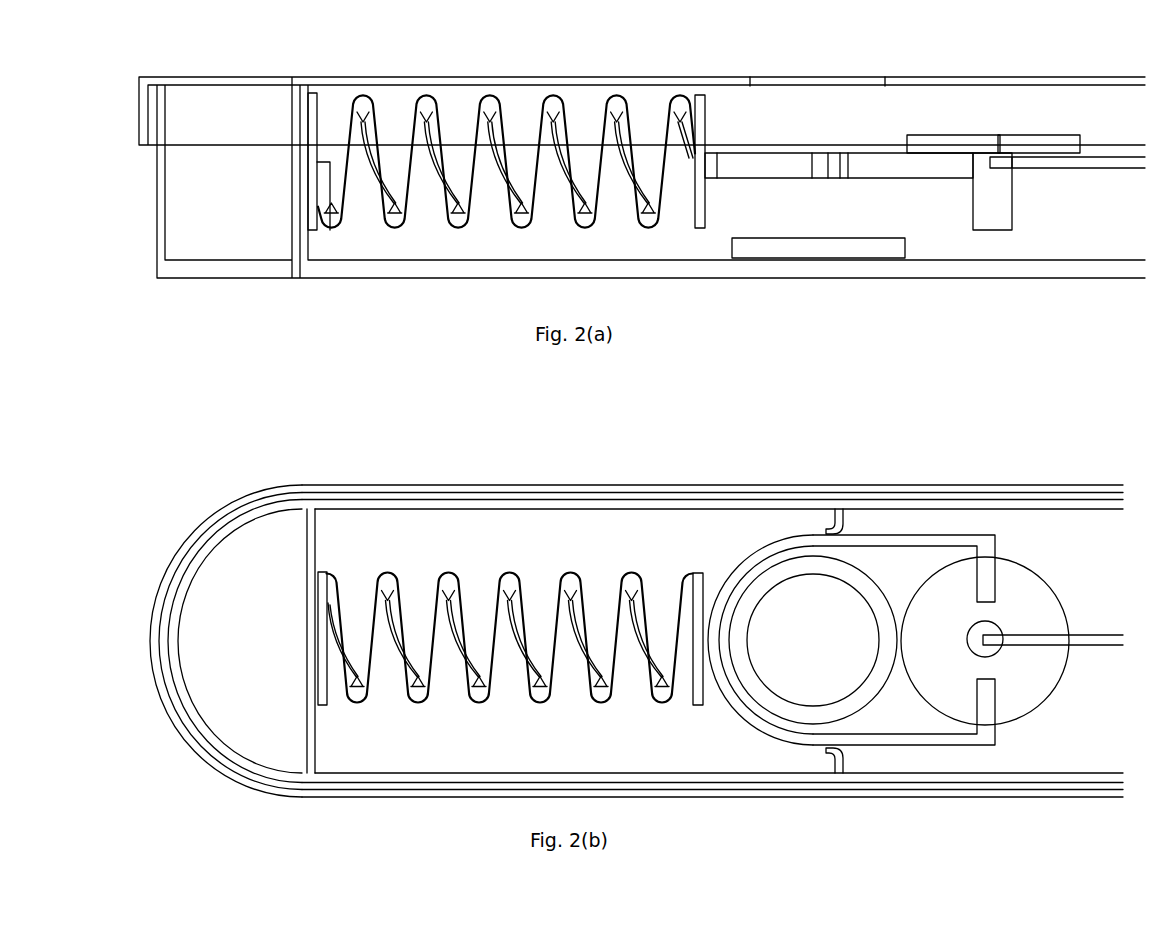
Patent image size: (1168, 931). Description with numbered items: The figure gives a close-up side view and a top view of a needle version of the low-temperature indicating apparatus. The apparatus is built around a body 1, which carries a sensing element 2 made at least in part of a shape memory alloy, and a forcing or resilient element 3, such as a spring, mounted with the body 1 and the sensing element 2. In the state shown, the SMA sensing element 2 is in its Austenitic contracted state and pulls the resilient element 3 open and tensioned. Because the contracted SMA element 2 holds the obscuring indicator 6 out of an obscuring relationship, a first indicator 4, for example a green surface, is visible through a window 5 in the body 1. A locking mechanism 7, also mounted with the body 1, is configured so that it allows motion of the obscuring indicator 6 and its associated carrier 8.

In FIG. 2A, the body 1 is at (331, 77).
In FIG. 2B, the body 1 is at (255, 490).
In FIG. 2A, the sensing element 2 is at (1127, 168).
In FIG. 2B, the sensing element 2 is at (1087, 633).
In FIG. 2A, the resilient element 3 is at (455, 229).
In FIG. 2B, the resilient element 3 is at (510, 590).
In FIG. 2A, the first indicator 4 is at (815, 260).
In FIG. 2B, the first indicator 4 is at (850, 647).
In FIG. 2A, the window 5 is at (821, 77).
In FIG. 2B, the window 5 is at (795, 704).
In FIG. 2A, the obscuring indicator 6 is at (998, 136).
In FIG. 2B, the obscuring indicator 6 is at (1030, 593).
In FIG. 2B, the locking mechanism 7 is at (832, 747).
In FIG. 2B, the carrier 8 is at (977, 580).